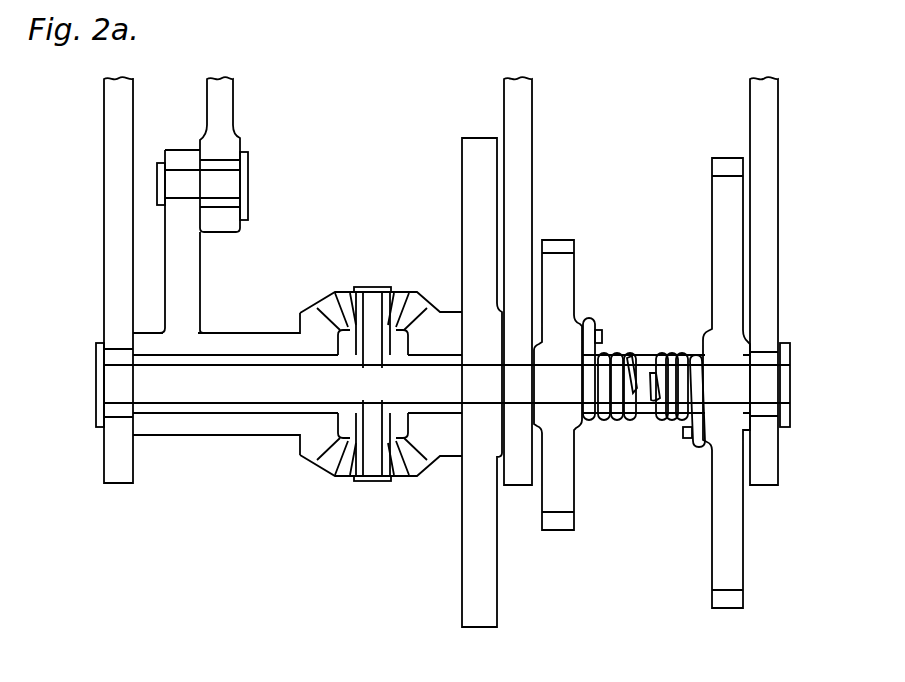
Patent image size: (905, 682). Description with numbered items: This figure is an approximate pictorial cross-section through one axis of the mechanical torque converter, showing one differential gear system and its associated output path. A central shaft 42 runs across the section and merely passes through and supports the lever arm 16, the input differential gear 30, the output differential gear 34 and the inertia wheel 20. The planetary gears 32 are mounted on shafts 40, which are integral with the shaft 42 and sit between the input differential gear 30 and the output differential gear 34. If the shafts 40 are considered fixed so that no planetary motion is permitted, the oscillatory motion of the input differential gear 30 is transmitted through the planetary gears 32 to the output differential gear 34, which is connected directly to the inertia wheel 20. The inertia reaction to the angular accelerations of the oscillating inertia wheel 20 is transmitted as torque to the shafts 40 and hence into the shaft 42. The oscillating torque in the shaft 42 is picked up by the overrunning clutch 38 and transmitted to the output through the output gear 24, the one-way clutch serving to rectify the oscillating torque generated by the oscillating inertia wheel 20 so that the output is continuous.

The lever arm 16 is at (193, 250).
The inertia wheel 20 is at (468, 557).
The output gear 24 is at (712, 598).
The input differential gear 30 is at (310, 443).
The planetary gears 32 is at (397, 300).
The output differential gear 34 is at (436, 452).
The overrunning clutch 38 is at (667, 360).
The shafts 40 is at (388, 284).
The shaft 42 is at (112, 390).